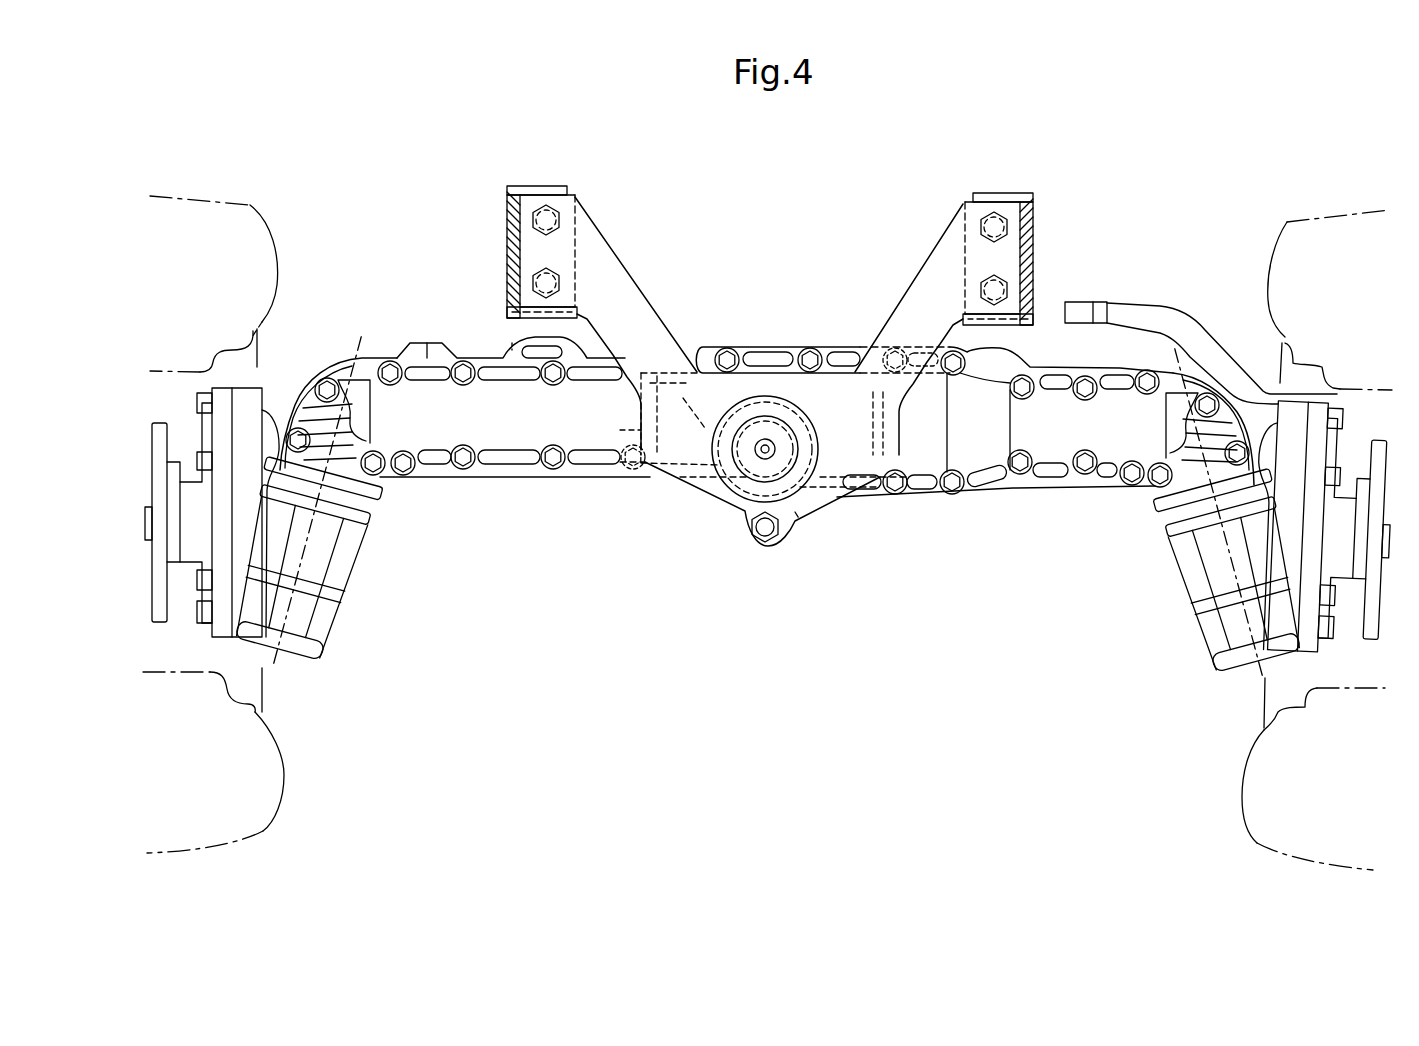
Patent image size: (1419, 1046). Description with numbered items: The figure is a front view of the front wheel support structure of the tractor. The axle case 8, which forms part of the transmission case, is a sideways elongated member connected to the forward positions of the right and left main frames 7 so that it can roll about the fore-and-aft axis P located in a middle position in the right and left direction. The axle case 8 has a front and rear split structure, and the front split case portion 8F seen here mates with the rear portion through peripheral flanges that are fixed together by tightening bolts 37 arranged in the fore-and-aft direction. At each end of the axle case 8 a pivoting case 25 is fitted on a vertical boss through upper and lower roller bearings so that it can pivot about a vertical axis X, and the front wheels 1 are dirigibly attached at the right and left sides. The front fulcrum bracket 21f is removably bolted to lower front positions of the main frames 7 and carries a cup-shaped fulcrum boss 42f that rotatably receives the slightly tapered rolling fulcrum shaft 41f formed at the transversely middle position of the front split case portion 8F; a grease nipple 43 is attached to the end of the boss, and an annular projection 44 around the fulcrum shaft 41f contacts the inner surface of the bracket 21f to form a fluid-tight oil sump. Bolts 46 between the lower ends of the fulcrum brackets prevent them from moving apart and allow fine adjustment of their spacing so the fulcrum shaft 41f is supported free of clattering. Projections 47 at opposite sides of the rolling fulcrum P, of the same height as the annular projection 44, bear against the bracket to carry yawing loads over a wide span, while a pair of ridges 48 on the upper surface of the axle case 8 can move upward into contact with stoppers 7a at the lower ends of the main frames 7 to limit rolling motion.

The front wheels 1 is at (178, 196).
The main frames 7 is at (507, 249).
The stoppers 7a is at (560, 338).
The axle case 8 is at (603, 482).
The front split case portion 8F is at (922, 478).
The front fulcrum bracket 21f is at (878, 332).
The pivoting cases 25 is at (320, 620).
The tightening bolts 37 is at (553, 470).
The rolling fulcrum shaft 41f is at (797, 522).
The fulcrum boss 42f is at (757, 480).
The grease nipple 43 is at (775, 450).
The annular projections 44 is at (672, 414).
The bolts 46 is at (763, 526).
The projections 47 is at (641, 428).
The ridges 48 is at (512, 343).
The fore-and-aft axis P is at (765, 448).
The vertical axes X is at (355, 560).